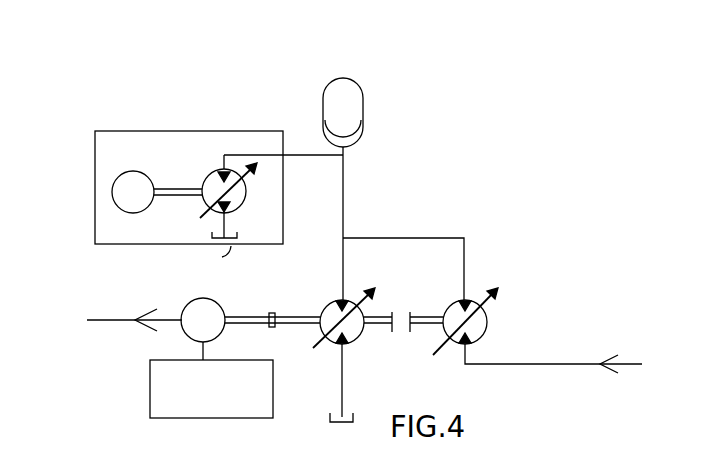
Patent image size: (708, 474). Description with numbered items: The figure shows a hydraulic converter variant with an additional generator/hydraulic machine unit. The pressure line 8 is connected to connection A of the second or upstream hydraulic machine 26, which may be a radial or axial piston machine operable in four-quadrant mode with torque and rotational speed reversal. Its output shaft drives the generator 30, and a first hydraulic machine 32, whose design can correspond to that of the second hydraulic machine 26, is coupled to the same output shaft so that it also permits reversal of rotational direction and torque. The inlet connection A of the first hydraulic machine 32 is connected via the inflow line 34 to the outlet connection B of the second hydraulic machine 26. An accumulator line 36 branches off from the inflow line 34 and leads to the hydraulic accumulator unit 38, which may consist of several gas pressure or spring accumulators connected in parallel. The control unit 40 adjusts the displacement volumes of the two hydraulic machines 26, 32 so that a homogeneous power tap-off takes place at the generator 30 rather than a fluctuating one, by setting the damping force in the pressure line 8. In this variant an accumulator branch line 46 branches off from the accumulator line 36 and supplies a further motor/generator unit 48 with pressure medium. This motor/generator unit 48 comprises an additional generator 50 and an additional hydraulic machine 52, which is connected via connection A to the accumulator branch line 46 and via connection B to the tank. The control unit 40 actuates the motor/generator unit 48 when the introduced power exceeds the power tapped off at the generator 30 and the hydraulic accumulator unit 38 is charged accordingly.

The pressure line 8 is at (582, 362).
The second hydraulic machine 26 is at (478, 332).
The generator 30 is at (210, 303).
The first hydraulic machine 32 is at (358, 318).
The inflow line 34 is at (454, 236).
The accumulator line 36 is at (345, 192).
The hydraulic accumulator unit 38 is at (355, 108).
The control unit 40 is at (265, 386).
The accumulator branch line 46 is at (303, 153).
The motor/generator unit 48 is at (95, 156).
The additional generator 50 is at (118, 210).
The additional hydraulic machine 52 is at (185, 158).